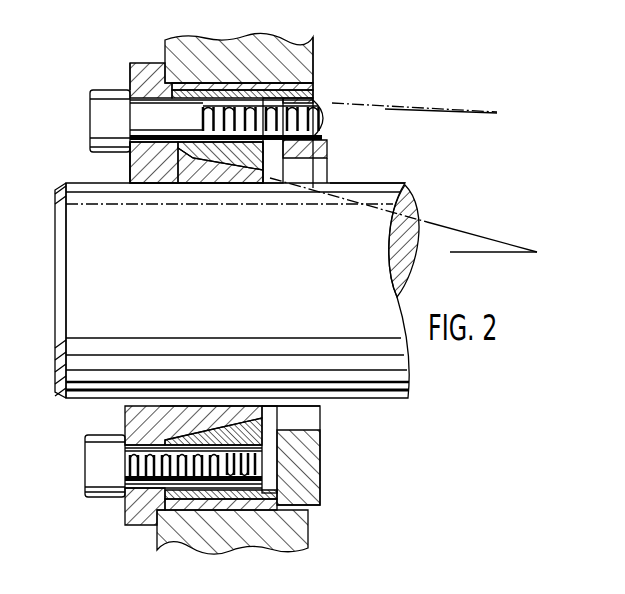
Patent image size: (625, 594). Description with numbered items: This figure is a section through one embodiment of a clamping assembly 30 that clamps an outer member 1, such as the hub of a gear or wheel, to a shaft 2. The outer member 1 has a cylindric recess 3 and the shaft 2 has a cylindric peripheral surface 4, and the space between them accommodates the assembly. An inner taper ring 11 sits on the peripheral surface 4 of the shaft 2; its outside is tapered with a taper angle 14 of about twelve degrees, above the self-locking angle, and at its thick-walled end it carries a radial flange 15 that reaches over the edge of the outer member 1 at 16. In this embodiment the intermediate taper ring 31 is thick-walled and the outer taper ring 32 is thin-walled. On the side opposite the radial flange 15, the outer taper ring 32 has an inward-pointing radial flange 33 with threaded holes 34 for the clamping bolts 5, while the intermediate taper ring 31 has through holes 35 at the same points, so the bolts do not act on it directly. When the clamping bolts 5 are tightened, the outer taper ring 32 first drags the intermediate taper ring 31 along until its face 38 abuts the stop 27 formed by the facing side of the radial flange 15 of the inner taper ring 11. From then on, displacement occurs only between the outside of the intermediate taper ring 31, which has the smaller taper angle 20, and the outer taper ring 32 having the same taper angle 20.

The outer member 1 is at (298, 52).
The shaft 2 is at (80, 262).
The cylindric recess 3 is at (315, 90).
The cylindric peripheral surface 4 is at (366, 188).
The clamping bolts 5 is at (92, 142).
The inner taper ring 11 is at (175, 148).
The taper angle 14 is at (461, 290).
The radial flange 15 is at (140, 84).
The edge of the outer member 16 is at (157, 68).
The taper angle 20 is at (403, 140).
The stop 27 is at (170, 146).
The clamping assembly 30 is at (398, 58).
The intermediate taper ring 31 is at (260, 172).
The outer taper ring 32 is at (295, 83).
The inward-pointing radial flange 33 is at (325, 152).
The threaded holes 34 is at (330, 128).
The through holes 35 is at (230, 163).
The face 38 is at (192, 158).